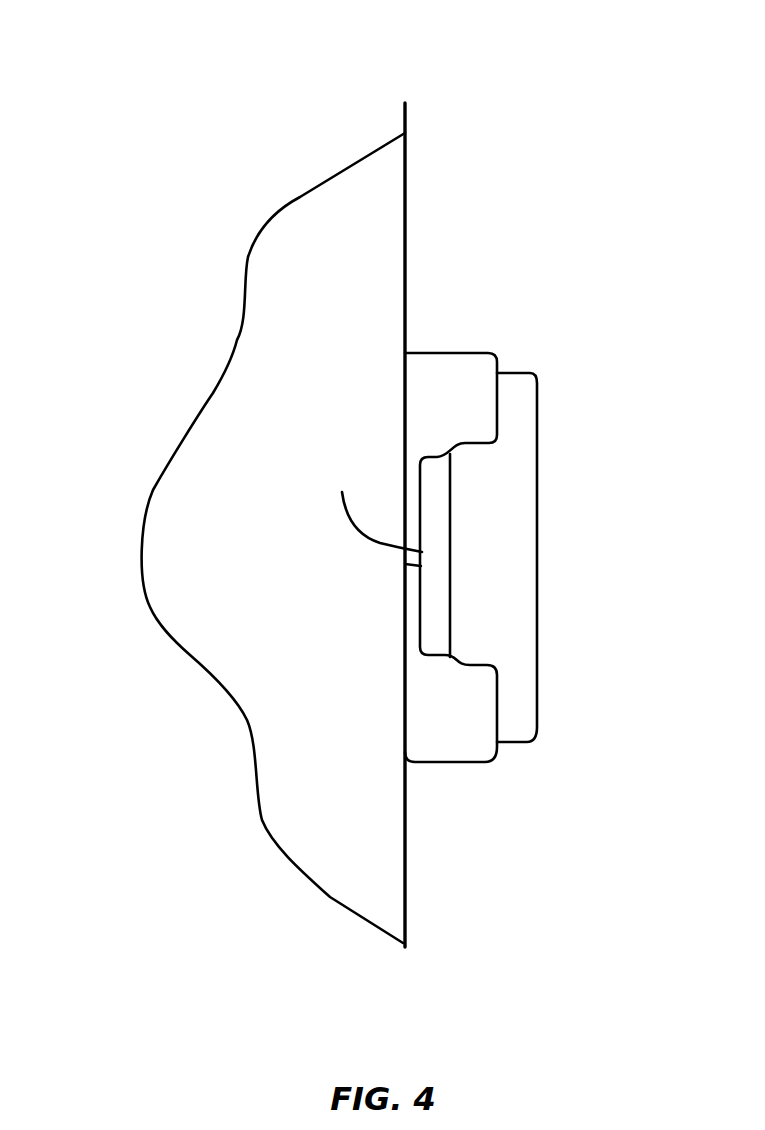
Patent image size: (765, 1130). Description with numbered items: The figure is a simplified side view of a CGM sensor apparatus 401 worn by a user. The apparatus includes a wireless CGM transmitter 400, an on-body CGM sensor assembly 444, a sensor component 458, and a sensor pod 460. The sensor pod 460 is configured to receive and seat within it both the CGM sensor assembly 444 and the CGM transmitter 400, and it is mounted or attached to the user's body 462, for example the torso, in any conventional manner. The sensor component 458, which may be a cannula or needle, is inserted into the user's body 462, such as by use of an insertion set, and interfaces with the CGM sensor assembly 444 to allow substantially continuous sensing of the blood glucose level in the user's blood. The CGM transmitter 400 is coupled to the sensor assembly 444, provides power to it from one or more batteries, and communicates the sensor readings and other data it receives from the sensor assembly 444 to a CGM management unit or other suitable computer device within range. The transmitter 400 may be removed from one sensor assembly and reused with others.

The CGM sensor apparatus 401 is at (146, 64).
The wireless CGM transmitter 400 is at (556, 548).
The sensor pod 460 is at (500, 344).
The on-body CGM sensor assembly 444 is at (468, 601).
The sensor component 458 is at (352, 527).
The user's body 462 is at (348, 825).